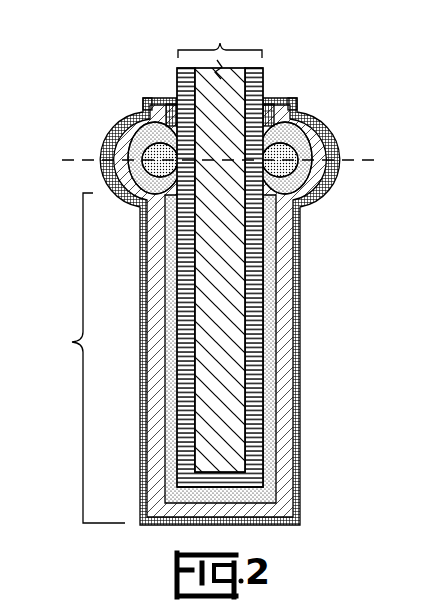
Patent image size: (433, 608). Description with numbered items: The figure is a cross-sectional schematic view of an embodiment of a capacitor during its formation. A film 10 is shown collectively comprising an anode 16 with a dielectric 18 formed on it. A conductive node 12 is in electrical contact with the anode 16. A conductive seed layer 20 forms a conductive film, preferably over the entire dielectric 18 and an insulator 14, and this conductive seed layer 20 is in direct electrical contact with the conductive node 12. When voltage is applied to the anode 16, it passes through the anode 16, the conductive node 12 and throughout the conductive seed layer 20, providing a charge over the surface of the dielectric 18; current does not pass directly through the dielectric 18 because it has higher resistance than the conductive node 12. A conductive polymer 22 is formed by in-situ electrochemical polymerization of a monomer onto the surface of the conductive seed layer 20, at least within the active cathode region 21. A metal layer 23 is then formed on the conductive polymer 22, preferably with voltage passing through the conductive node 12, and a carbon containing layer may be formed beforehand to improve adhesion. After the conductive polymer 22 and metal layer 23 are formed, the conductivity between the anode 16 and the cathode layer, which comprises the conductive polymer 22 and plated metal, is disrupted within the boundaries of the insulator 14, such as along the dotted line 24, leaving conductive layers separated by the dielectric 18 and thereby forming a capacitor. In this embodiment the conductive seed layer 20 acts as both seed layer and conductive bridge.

The film 10 is at (219, 42).
The conductive node 12 is at (173, 110).
The insulator 14 is at (160, 172).
The anode 16 is at (237, 100).
The dielectric 18 is at (180, 80).
The conductive seed layer 20 is at (268, 283).
The active cathode region 21 is at (82, 358).
The conductive polymer 22 is at (282, 352).
The metal layer 23 is at (297, 458).
The dotted line 24 is at (352, 158).